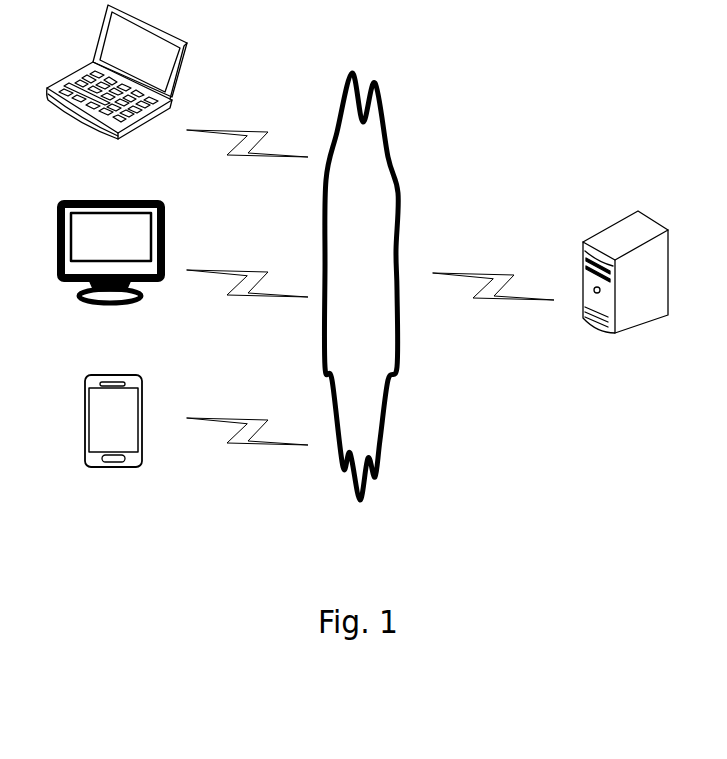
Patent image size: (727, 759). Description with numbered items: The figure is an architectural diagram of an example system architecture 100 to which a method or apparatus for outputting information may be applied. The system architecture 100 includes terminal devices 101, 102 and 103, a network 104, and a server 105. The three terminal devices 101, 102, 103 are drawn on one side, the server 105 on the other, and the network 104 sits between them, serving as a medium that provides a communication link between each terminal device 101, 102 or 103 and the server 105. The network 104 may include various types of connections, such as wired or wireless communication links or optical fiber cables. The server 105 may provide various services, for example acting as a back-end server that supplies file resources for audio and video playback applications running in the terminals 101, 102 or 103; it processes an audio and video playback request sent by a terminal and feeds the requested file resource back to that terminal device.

The system architecture 100 is at (571, 29).
The terminal device 101 is at (117, 88).
The terminal device 102 is at (111, 272).
The terminal device 103 is at (113, 438).
The network 104 is at (361, 286).
The server 105 is at (625, 289).